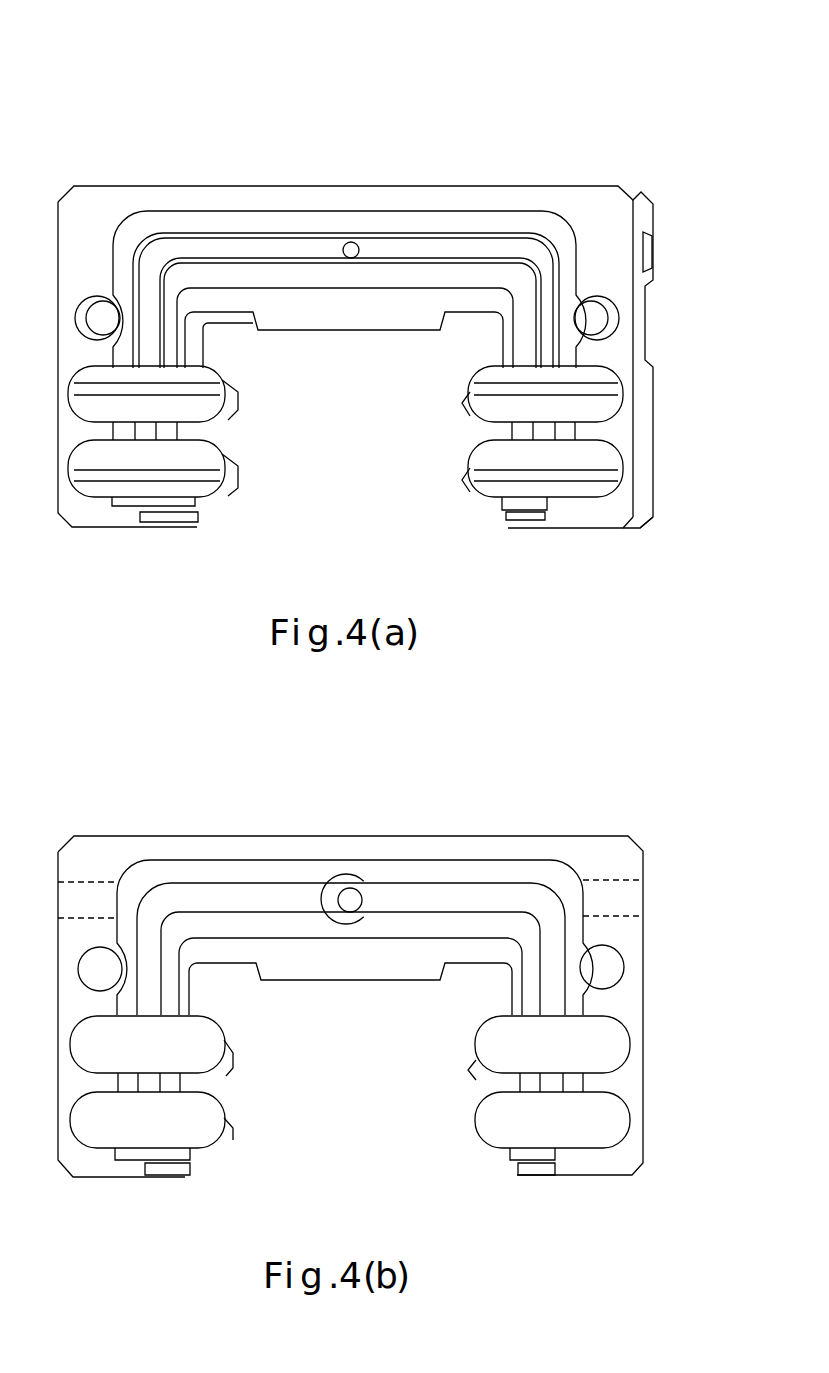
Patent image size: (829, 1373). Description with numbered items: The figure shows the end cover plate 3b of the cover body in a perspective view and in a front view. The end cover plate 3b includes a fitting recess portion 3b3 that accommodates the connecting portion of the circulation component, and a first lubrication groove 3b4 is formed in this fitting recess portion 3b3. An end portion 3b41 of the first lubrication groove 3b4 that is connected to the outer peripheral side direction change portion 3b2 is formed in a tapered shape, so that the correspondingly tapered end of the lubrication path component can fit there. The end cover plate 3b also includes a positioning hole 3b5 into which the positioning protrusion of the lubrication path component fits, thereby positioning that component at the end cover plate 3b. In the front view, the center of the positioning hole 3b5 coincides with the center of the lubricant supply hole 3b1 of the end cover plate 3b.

In FIG. 4A, the end cover plate 3b is at (117, 111).
In FIG. 4B, the end cover plate 3b is at (117, 794).
In FIG. 4B, the lubricant supply hole 3b1 is at (378, 895).
In FIG. 4A, the outer peripheral side direction change portion 3b2 is at (580, 410).
In FIG. 4A, the fitting recess portion 3b3 is at (454, 230).
In FIG. 4A, the first lubrication groove 3b4 is at (197, 252).
In FIG. 4A, the end portion 3b41 is at (147, 353).
In FIG. 4B, the end portion 3b41 is at (552, 998).
In FIG. 4A, the positioning hole 3b5 is at (353, 246).
In FIG. 4B, the positioning hole 3b5 is at (343, 892).